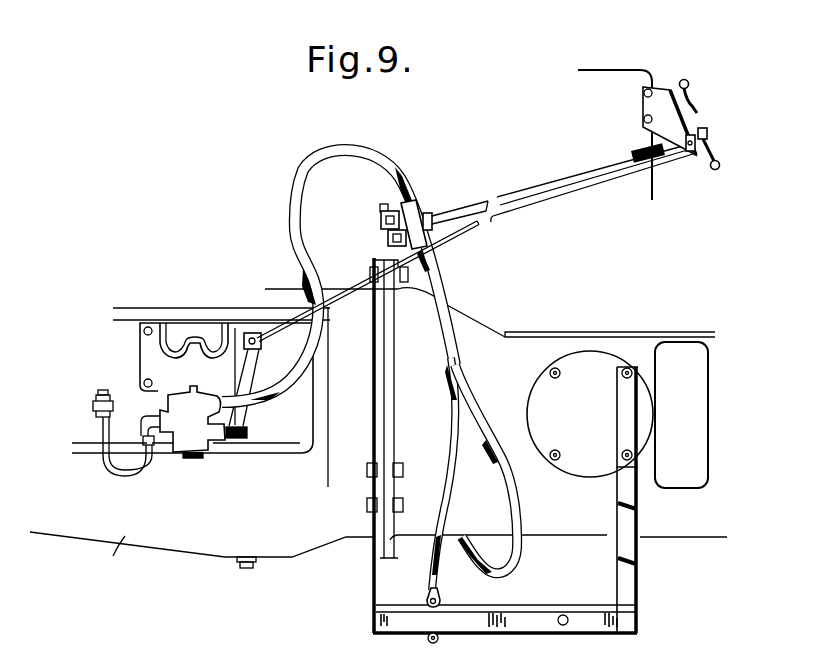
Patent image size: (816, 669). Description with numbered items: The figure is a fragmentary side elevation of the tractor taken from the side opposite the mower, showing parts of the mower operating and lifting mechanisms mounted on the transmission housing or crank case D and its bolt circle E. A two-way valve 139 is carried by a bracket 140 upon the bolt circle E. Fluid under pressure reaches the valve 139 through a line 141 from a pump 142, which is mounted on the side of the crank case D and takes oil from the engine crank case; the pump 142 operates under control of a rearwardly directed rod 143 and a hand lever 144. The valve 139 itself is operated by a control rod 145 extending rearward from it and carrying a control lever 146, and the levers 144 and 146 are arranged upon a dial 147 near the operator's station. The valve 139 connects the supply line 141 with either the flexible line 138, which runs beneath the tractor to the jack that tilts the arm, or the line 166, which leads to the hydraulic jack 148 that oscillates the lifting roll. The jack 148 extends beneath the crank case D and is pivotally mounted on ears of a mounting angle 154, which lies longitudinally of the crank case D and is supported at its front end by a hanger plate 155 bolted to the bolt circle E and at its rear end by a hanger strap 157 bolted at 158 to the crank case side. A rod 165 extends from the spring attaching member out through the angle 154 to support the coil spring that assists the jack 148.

The flexible line 138 is at (506, 572).
The two-way valve 139 is at (417, 210).
The bracket 140 is at (380, 212).
The line 141 is at (310, 165).
The pump 142 is at (190, 318).
The rod 143 is at (475, 227).
The hand lever 144 is at (690, 93).
The control rod 145 is at (600, 167).
The control lever 146 is at (712, 150).
The dial 147 is at (695, 132).
The hydraulic jack 148 is at (427, 597).
The mounting angle 154 is at (474, 626).
The hanger plate 155 is at (373, 583).
The hanger strap 157 is at (630, 580).
The bolt 158 is at (617, 438).
The rod 165 is at (563, 614).
The line 166 is at (440, 581).
The transmission housing D is at (111, 552).
The flanges E is at (392, 399).